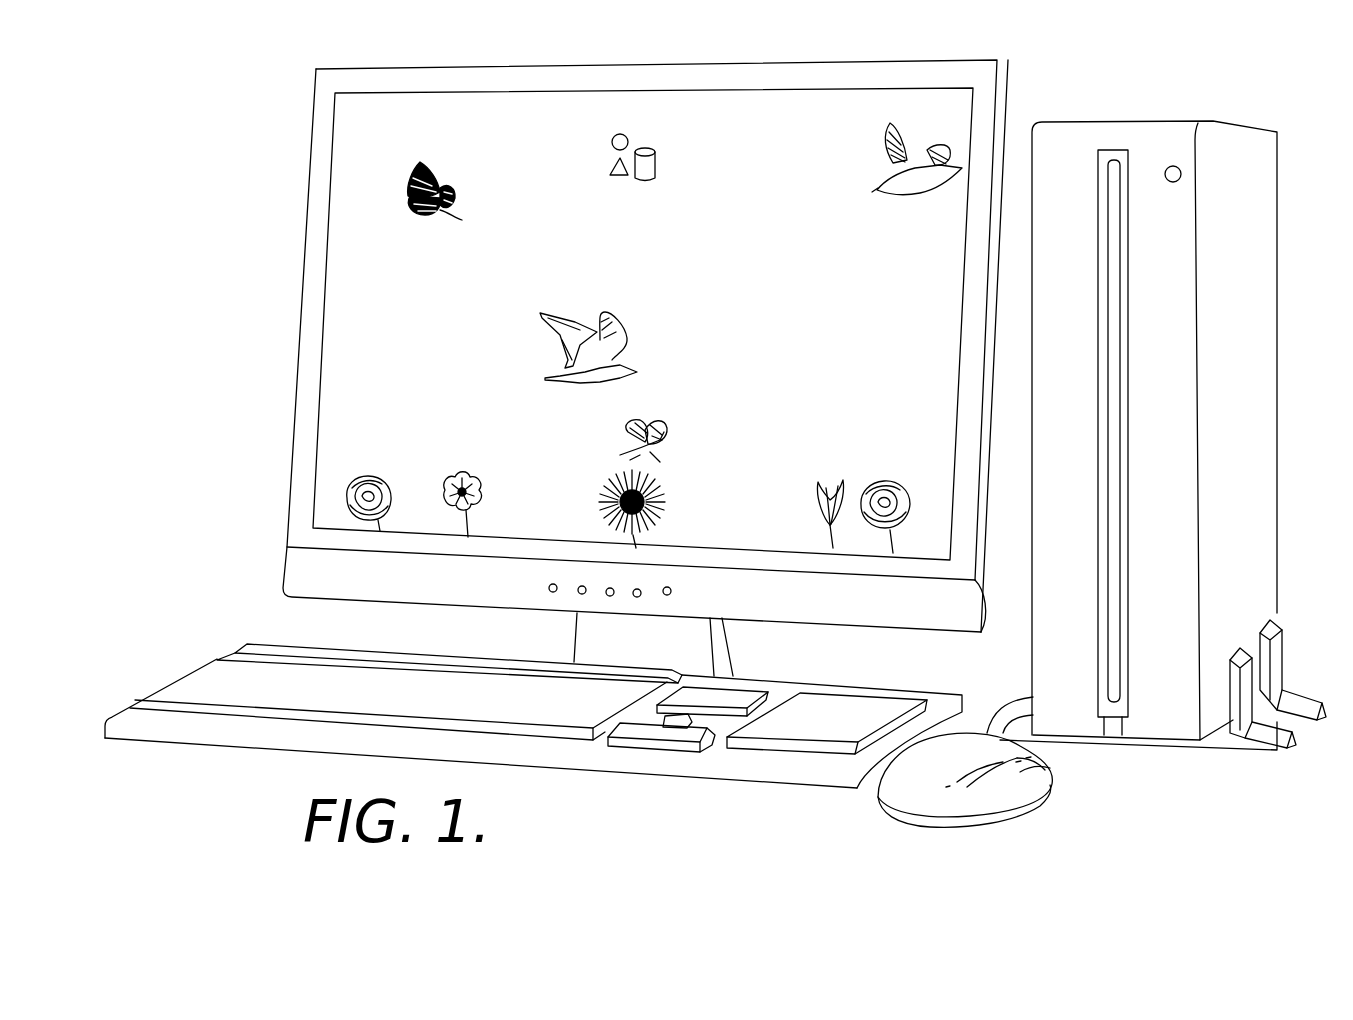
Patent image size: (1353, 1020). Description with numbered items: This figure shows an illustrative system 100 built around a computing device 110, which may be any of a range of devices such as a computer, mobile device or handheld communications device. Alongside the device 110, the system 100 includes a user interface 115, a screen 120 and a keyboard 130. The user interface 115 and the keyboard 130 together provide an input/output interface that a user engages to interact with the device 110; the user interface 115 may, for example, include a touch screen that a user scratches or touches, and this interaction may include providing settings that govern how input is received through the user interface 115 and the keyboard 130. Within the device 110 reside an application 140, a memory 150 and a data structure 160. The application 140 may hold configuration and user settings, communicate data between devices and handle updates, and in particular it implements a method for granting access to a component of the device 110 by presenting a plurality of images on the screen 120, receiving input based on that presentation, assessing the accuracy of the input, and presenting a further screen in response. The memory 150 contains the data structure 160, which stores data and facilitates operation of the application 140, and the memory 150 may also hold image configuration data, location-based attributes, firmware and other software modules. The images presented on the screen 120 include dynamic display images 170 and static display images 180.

The system 100 is at (205, 153).
The computing device 110 is at (1138, 122).
The user interface 115 is at (330, 176).
The screen 120 is at (650, 60).
The keyboard 130 is at (677, 778).
The application 140 is at (624, 134).
The memory 150 is at (610, 166).
The data structure 160 is at (656, 163).
The dynamic display images 170 is at (417, 163).
The static display images 180 is at (371, 478).